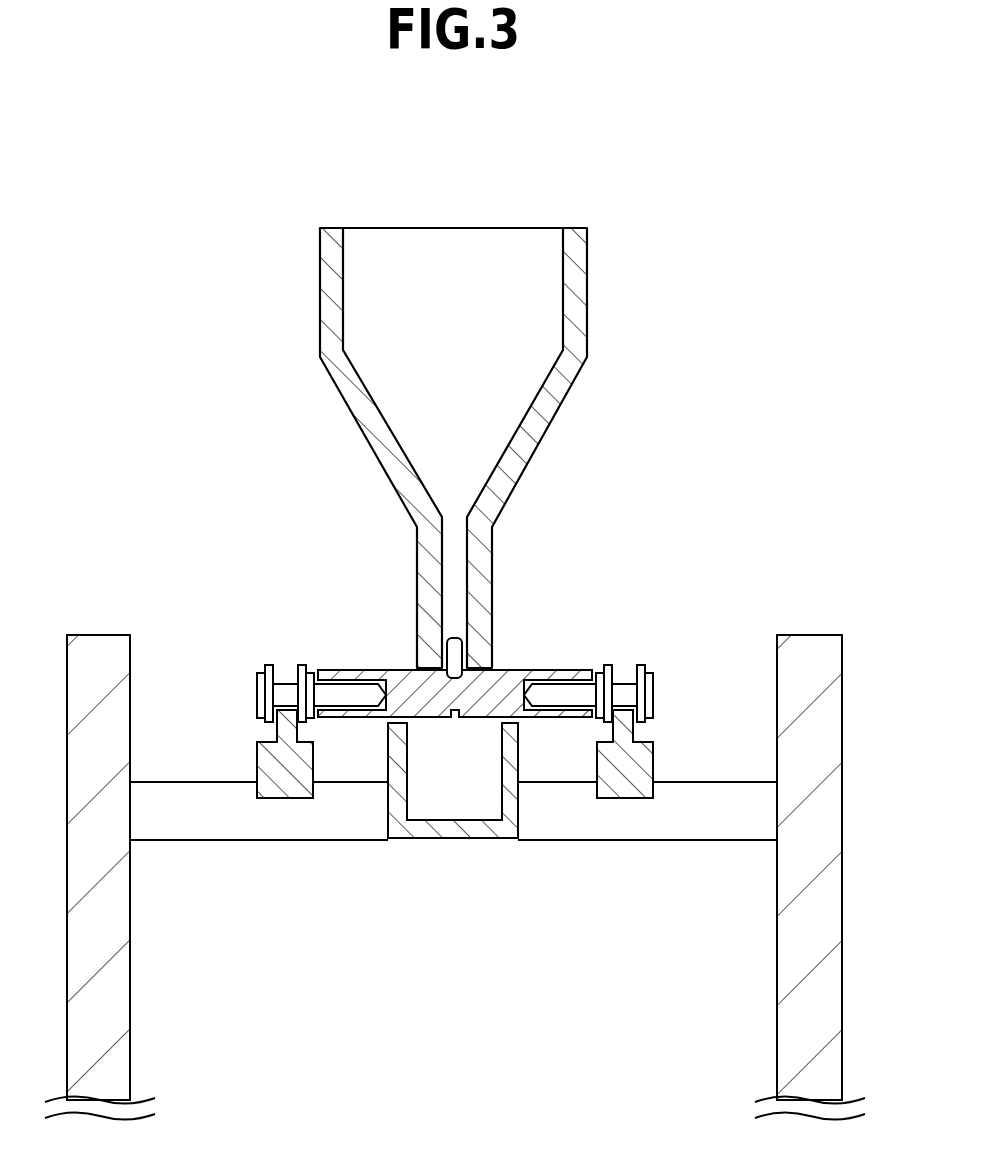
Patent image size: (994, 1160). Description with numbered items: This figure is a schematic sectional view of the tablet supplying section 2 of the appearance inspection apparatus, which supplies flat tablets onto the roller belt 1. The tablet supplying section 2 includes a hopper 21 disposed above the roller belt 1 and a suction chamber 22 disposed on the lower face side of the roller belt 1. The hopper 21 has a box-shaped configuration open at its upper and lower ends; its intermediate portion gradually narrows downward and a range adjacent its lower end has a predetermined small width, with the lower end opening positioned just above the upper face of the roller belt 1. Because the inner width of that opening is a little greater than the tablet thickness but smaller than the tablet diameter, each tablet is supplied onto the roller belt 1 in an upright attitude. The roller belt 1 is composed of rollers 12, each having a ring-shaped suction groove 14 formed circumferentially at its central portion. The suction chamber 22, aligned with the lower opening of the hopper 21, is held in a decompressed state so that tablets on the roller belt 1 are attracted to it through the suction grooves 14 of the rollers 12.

The roller belt 1 is at (455, 729).
The tablet supplying section 2 is at (506, 420).
The roller 12 is at (503, 668).
The suction groove 14 is at (455, 717).
The hopper 21 is at (578, 336).
The suction chamber 22 is at (416, 828).